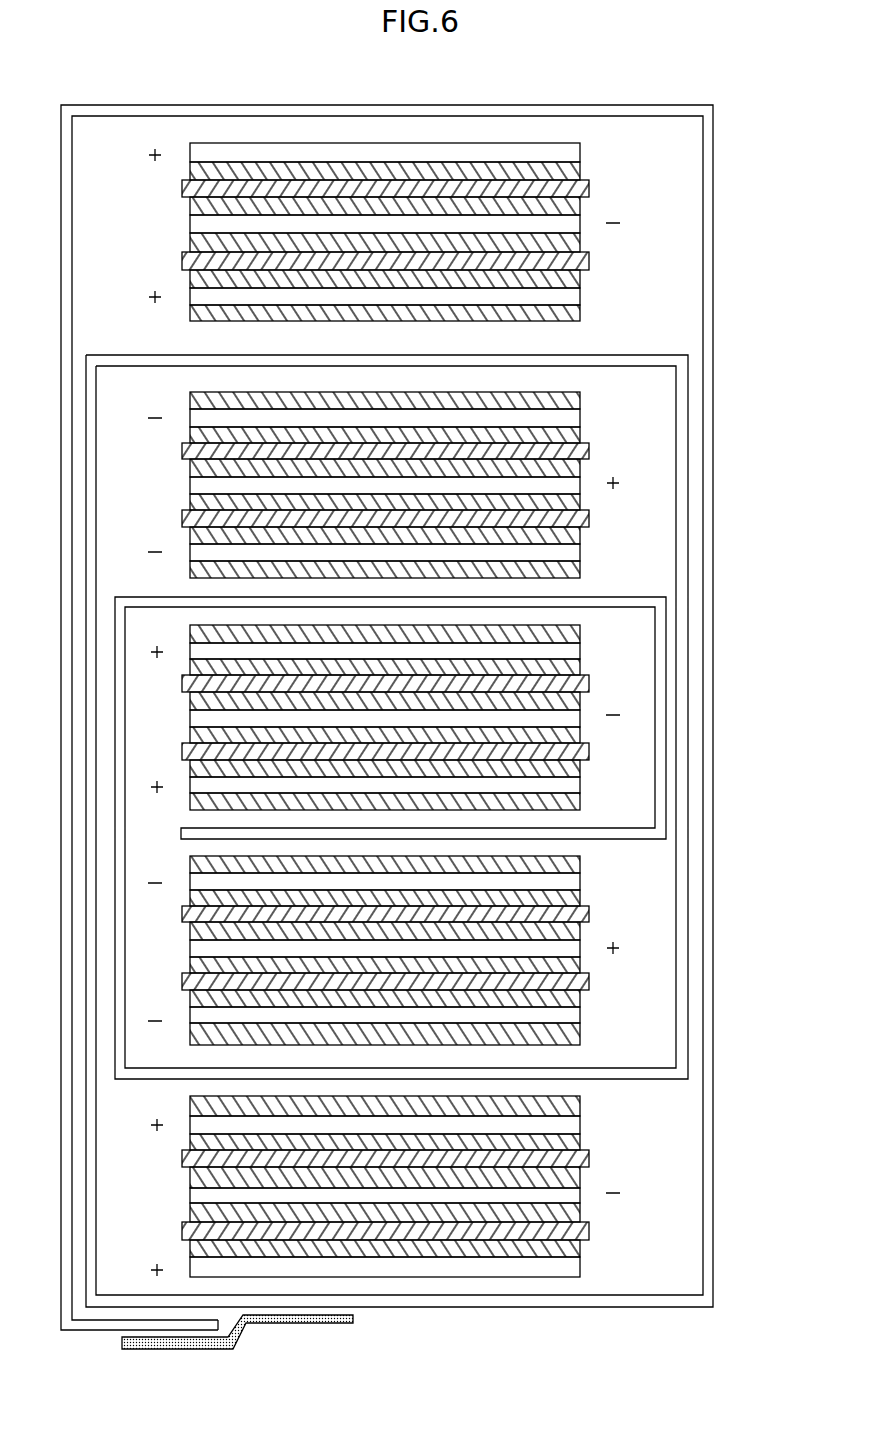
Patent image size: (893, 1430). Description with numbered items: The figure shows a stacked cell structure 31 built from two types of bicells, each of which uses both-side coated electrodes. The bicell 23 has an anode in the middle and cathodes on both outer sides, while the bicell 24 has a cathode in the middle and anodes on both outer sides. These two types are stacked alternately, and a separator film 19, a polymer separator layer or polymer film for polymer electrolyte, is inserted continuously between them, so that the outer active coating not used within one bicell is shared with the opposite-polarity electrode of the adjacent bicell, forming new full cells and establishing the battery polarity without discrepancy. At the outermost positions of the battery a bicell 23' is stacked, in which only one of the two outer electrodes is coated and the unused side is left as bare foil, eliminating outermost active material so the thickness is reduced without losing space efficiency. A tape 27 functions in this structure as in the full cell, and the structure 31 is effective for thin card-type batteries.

The separator film 19 is at (708, 848).
The bicell 23 is at (380, 717).
The bicell with one outer electrode left as foil 23' is at (379, 710).
The bicell 24 is at (380, 718).
The tape 27 is at (330, 1318).
The structure 31 is at (735, 631).